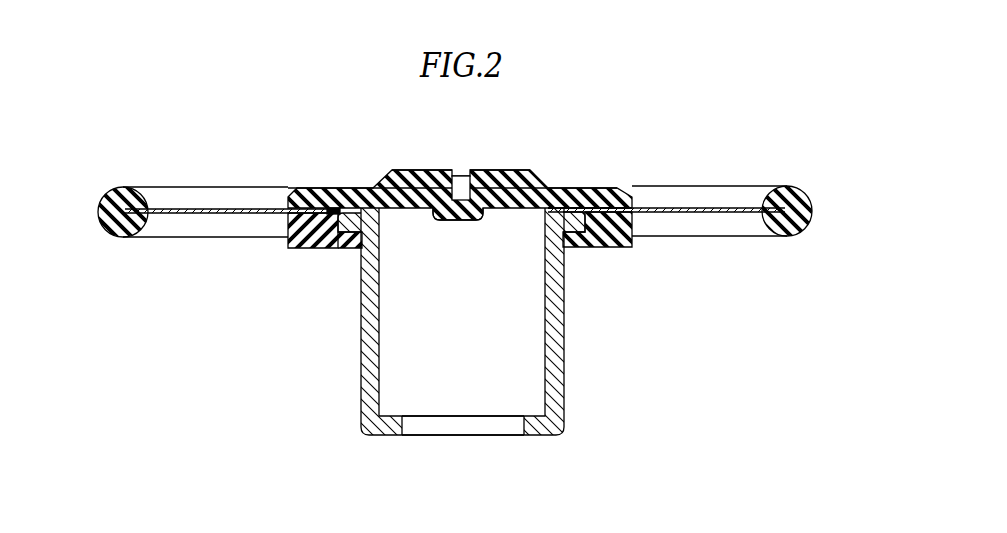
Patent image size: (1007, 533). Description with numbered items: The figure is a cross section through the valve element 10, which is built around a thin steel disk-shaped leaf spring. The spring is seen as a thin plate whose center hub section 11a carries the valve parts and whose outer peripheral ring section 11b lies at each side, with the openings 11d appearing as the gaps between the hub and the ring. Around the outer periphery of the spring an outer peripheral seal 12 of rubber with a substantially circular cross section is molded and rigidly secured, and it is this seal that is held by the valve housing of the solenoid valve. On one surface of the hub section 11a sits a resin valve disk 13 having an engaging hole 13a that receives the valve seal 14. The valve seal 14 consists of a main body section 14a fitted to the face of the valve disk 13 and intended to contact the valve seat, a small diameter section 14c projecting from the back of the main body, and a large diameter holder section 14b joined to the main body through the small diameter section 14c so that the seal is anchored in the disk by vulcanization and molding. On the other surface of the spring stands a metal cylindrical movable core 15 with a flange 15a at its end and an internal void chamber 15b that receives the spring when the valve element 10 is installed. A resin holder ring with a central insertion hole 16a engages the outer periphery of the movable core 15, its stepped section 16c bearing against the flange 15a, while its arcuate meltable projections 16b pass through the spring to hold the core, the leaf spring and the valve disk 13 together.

The valve element 10 is at (600, 336).
The center hub section 11a is at (353, 189).
The outer peripheral ring section 11b is at (765, 237).
The openings 11d is at (212, 195).
The outer peripheral seal 12 is at (133, 188).
The valve disk 13 is at (583, 205).
The engaging hole 13a is at (437, 200).
The valve seal 14 is at (510, 169).
The main body section 14a is at (412, 195).
The large diameter holder section 14b is at (457, 219).
The small diameter section 14c is at (490, 207).
The movable core 15 is at (372, 375).
The flange 15a is at (330, 252).
The void chamber 15b is at (438, 388).
The central insertion hole 16a is at (362, 258).
The meltable projections 16b is at (290, 250).
The stepped section 16c is at (577, 240).